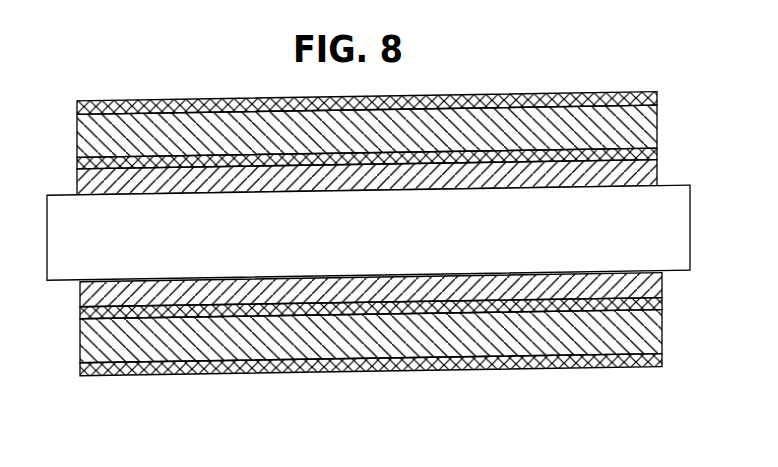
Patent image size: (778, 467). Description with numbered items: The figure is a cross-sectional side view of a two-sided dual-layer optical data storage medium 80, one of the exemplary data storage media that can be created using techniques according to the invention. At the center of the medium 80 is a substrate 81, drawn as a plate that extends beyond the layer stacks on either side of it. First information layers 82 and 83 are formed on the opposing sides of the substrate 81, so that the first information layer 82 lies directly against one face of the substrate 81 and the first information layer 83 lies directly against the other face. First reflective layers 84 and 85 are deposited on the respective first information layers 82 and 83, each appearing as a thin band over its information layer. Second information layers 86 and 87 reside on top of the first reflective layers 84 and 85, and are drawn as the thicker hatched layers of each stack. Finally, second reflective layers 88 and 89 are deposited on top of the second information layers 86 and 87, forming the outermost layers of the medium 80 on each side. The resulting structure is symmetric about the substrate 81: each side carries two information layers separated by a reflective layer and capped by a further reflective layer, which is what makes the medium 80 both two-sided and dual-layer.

The two-sided dual-layer optical data storage medium 80 is at (462, 81).
The substrate 81 is at (690, 230).
The first information layer 82 is at (657, 178).
The first information layer 83 is at (662, 280).
The first reflective layer 84 is at (77, 165).
The first reflective layer 85 is at (80, 313).
The second information layer 86 is at (657, 127).
The second information layer 87 is at (662, 328).
The second reflective layer 88 is at (77, 108).
The second reflective layer 89 is at (80, 370).